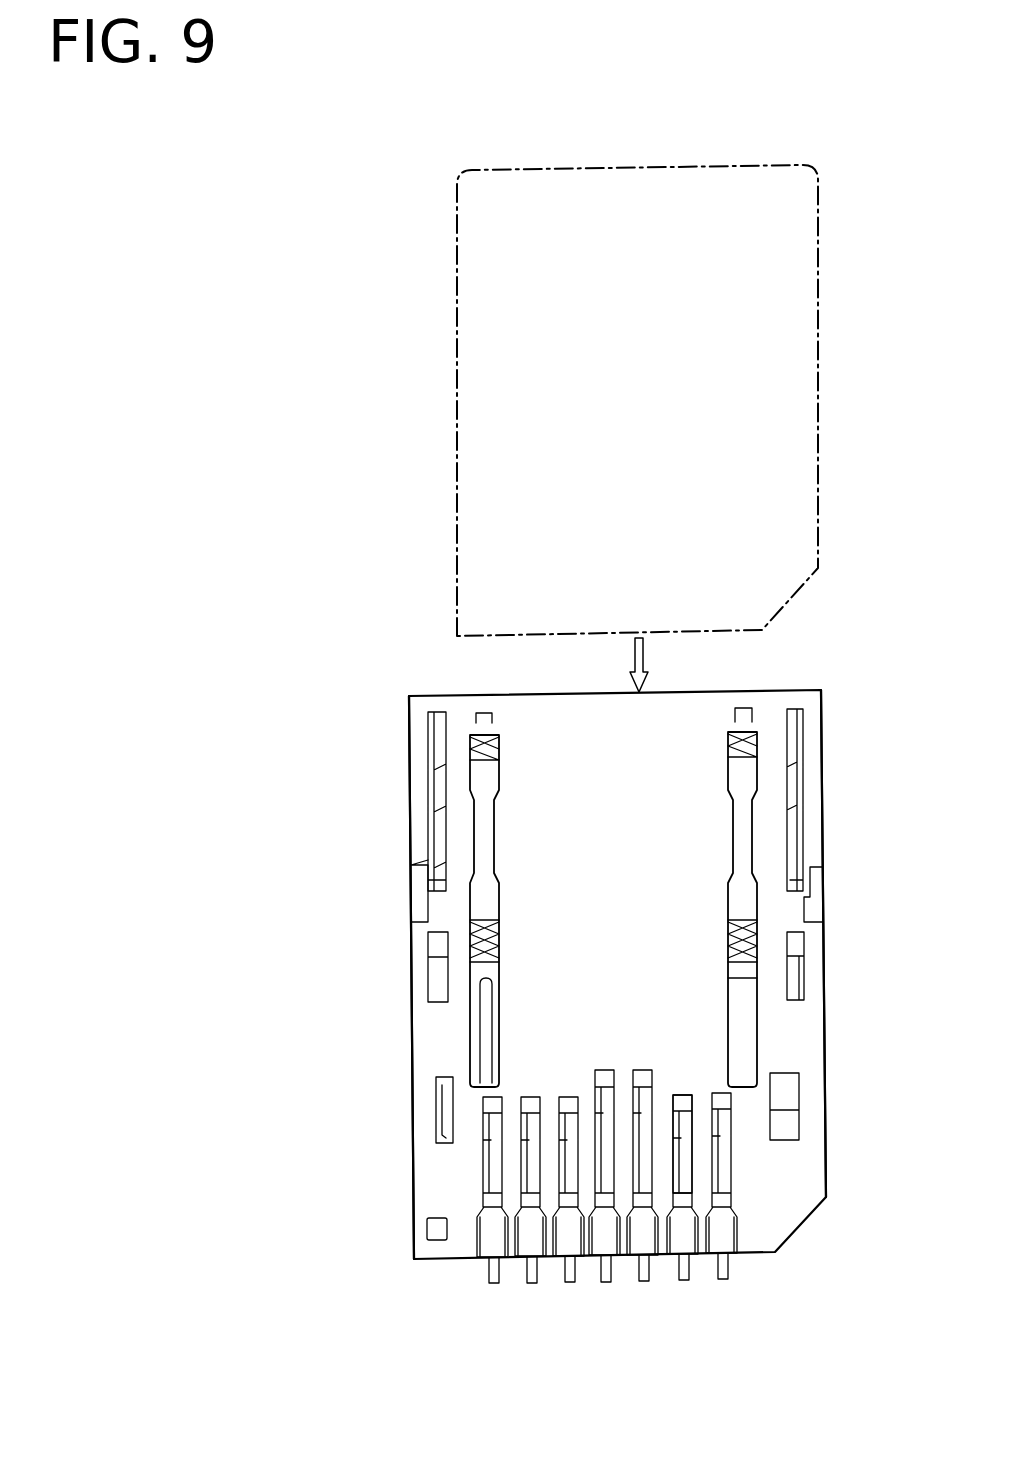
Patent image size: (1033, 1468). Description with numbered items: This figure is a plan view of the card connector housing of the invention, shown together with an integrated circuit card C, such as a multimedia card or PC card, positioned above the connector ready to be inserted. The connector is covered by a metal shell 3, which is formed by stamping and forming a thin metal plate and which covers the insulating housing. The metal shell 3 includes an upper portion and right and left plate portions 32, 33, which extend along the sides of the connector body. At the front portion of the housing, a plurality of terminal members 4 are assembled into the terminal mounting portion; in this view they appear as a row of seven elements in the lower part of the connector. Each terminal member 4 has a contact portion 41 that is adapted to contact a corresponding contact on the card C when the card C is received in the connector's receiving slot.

The integrated circuit card C is at (818, 408).
The metal shell 3 is at (815, 1027).
The left plate portion 32 is at (410, 1042).
The right plate portion 33 is at (824, 945).
The terminal member 4 is at (567, 1277).
The contact portion 41 is at (679, 1093).